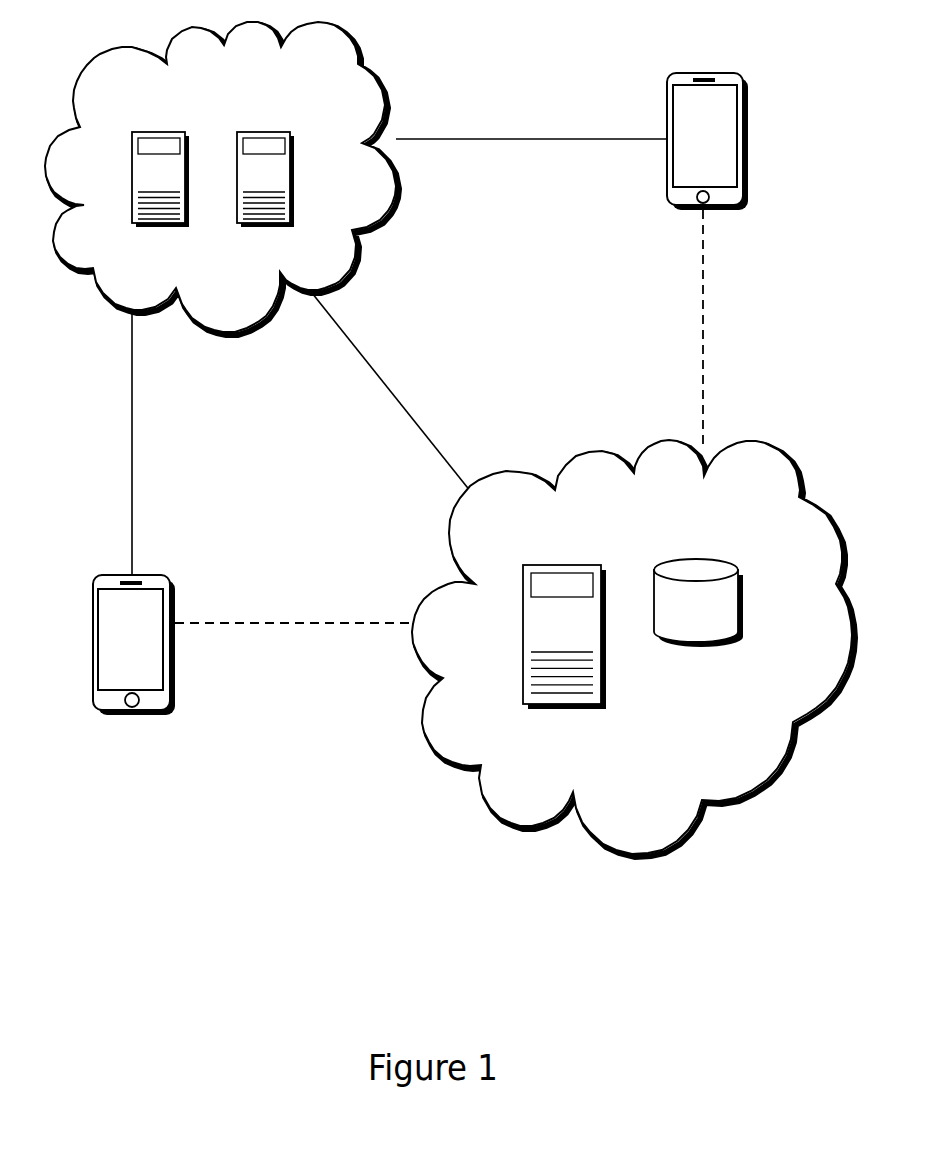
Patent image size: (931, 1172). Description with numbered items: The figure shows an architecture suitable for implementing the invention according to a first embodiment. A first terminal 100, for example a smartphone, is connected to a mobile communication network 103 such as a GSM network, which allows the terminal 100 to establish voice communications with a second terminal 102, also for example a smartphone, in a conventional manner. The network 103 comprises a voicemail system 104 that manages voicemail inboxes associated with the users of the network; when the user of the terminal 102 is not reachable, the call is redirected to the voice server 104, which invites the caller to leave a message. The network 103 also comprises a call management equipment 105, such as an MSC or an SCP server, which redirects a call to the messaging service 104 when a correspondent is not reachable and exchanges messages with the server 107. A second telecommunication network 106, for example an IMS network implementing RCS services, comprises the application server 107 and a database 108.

The first terminal 100 is at (145, 715).
The terminal 102 is at (717, 212).
The mobile communication network 103 is at (213, 332).
The voicemail system 104 is at (258, 132).
The call management equipment 105 is at (155, 132).
The second telecommunication network 106 is at (673, 843).
The server 107 is at (577, 706).
The database 108 is at (672, 644).